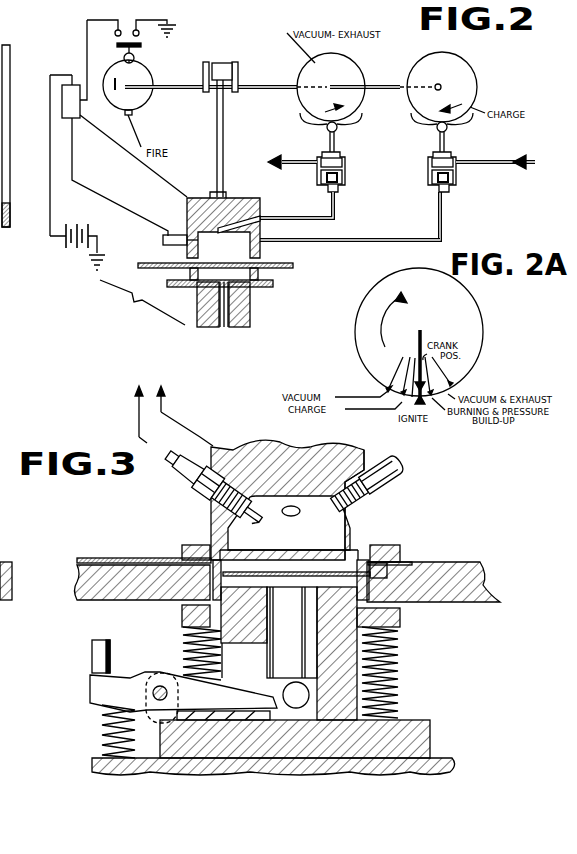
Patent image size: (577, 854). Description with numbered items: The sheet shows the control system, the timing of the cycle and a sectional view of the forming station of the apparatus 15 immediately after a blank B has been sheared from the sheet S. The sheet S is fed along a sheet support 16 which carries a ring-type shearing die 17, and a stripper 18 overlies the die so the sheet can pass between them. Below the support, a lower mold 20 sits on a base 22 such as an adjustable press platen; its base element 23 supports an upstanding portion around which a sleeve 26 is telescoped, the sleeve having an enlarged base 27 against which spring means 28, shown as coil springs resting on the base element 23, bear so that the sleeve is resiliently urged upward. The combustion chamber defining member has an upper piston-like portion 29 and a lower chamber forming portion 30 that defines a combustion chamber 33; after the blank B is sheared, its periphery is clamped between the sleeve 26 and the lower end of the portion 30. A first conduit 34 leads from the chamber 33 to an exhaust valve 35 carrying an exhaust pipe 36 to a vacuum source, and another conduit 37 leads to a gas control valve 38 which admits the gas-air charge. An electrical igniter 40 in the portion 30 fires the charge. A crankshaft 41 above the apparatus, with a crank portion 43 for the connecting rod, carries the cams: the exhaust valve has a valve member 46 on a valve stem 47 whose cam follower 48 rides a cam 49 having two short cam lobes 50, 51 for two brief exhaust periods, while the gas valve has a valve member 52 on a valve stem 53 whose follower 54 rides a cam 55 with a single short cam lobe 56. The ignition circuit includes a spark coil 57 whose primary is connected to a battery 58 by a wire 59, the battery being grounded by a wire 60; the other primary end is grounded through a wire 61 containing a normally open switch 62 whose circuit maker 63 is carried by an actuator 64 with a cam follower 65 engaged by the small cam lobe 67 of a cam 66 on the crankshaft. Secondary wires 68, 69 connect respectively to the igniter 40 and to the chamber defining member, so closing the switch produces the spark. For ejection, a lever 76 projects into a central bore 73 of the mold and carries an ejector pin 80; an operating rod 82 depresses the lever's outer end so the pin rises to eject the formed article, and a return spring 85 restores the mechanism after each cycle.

In FIG. 3, the apparatus 15 is at (455, 562).
In FIG. 2, the sheet support 16 is at (280, 267).
In FIG. 3, the sheet support 16 is at (107, 600).
In FIG. 3, the shearing die 17 is at (407, 562).
In FIG. 3, the stripper 18 is at (383, 545).
In FIG. 3, the lower mold 20 is at (396, 645).
In FIG. 3, the base 22 is at (443, 758).
In FIG. 3, the base element 23 is at (418, 727).
In FIG. 3, the sleeve 26 is at (343, 580).
In FIG. 3, the enlarged base 27 is at (183, 617).
In FIG. 3, the spring means 28 is at (397, 693).
In FIG. 2, the piston-like portion 29 is at (235, 204).
In FIG. 3, the piston-like portion 29 is at (355, 450).
In FIG. 2, the chamber forming portion 30 is at (283, 245).
In FIG. 3, the combustion chamber 33 is at (350, 514).
In FIG. 2, the first conduit 34 is at (335, 208).
In FIG. 3, the first conduit 34 is at (300, 515).
In FIG. 2, the exhaust valve 35 is at (345, 172).
In FIG. 2, the exhaust pipe 36 is at (296, 158).
In FIG. 2, the conduit 37 is at (343, 243).
In FIG. 3, the conduit 37 is at (402, 471).
In FIG. 2, the gas control valve 38 is at (460, 182).
In FIG. 2, the electrical igniter 40 is at (163, 240).
In FIG. 3, the electrical igniter 40 is at (197, 497).
In FIG. 2, the crankshaft 41 is at (269, 86).
In FIG. 2, the crank portion 43 is at (235, 62).
In FIG. 2, the valve member 46 is at (10, 63).
In FIG. 2, the valve stem 47 is at (335, 143).
In FIG. 2, the cam follower 48 is at (340, 124).
In FIG. 2, the cam 49 is at (347, 73).
In FIG. 2, the cam lobe 50 is at (298, 116).
In FIG. 2, the cam lobe 51 is at (357, 116).
In FIG. 2, the valve member 52 is at (427, 186).
In FIG. 2, the valve stem 53 is at (447, 141).
In FIG. 2, the follower 54 is at (448, 126).
In FIG. 2, the cam 55 is at (463, 72).
In FIG. 2, the cam lobe 56 is at (430, 127).
In FIG. 2, the spark coil 57 is at (74, 121).
In FIG. 2, the battery 58 is at (72, 250).
In FIG. 2, the wire 59 is at (50, 206).
In FIG. 2, the wire 60 is at (98, 242).
In FIG. 2, the wire 61 is at (86, 34).
In FIG. 2, the switch 62 is at (130, 22).
In FIG. 2, the circuit maker 63 is at (143, 46).
In FIG. 2, the actuator 64 is at (124, 57).
In FIG. 2, the cam follower 65 is at (134, 57).
In FIG. 2, the cam 66 is at (145, 96).
In FIG. 2, the cam lobe 67 is at (132, 114).
In FIG. 2, the wire 68 is at (119, 204).
In FIG. 2, the wire 69 is at (160, 177).
In FIG. 3, the central bore 73 is at (294, 697).
In FIG. 3, the lever 76 is at (137, 690).
In FIG. 3, the ejector pin 80 is at (283, 651).
In FIG. 3, the operating rod 82 is at (95, 650).
In FIG. 3, the return spring 85 is at (112, 710).
In FIG. 2, the sheet S is at (288, 263).
In FIG. 3, the sheet S is at (113, 558).
In FIG. 3, the blank B is at (270, 570).